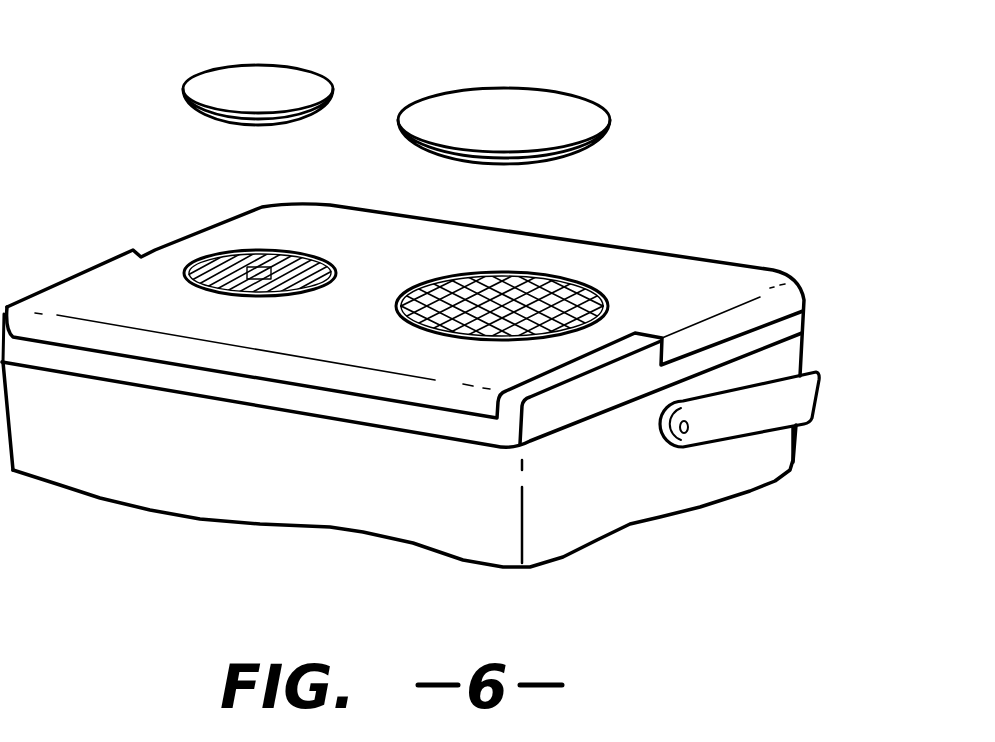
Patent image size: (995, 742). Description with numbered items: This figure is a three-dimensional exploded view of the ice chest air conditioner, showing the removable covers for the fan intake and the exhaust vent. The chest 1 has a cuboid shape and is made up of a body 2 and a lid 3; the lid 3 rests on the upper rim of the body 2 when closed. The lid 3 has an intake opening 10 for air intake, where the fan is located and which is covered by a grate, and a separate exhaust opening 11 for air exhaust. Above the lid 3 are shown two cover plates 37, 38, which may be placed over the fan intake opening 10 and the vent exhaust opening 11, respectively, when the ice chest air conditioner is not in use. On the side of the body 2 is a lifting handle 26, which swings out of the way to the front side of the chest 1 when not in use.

The chest 1 is at (442, 303).
The body 2 is at (93, 453).
The lid 3 is at (403, 308).
The intake opening 10 is at (533, 297).
The exhaust opening 11 is at (233, 268).
The lifting handle 26 is at (817, 400).
The cover plate 37 is at (550, 90).
The cover plate 38 is at (218, 68).